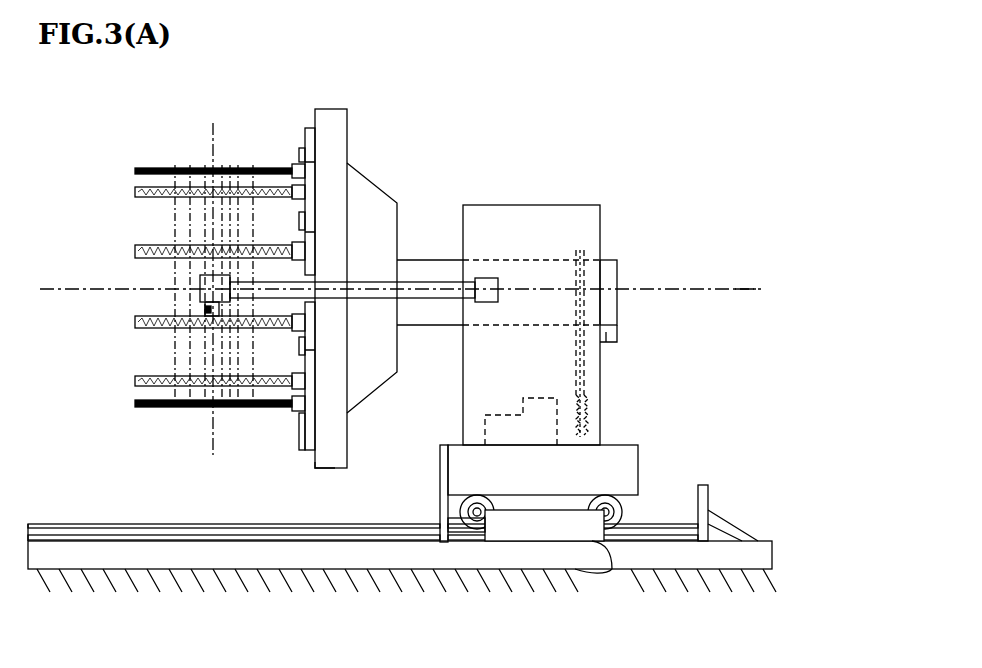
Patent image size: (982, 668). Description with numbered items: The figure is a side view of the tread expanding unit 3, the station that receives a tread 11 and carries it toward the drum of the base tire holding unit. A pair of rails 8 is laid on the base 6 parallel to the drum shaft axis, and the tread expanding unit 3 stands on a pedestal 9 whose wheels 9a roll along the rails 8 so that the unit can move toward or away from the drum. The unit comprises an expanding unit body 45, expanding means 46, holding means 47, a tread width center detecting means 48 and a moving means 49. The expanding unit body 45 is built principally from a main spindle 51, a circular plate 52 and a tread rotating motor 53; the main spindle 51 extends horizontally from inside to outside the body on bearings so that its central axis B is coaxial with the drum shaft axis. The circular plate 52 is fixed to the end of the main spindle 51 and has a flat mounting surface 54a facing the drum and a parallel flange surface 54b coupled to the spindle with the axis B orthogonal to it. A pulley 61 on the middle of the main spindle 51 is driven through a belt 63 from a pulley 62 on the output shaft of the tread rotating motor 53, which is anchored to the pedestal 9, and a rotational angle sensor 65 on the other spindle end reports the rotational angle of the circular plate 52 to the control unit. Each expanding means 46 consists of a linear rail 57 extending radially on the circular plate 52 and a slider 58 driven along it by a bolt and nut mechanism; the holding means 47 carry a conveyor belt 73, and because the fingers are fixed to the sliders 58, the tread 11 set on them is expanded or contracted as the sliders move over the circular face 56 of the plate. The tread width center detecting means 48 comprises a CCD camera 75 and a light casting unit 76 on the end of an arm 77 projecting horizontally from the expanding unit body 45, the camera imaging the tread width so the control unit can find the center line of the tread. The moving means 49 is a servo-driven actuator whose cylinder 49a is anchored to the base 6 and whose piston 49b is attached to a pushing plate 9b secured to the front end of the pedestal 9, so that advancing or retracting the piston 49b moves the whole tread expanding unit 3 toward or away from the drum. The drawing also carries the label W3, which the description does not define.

The tread expanding unit 3 is at (512, 284).
The base 6 is at (762, 541).
The rails 8 is at (63, 524).
The pedestal 9 is at (540, 486).
The wheels 9a is at (625, 518).
The pushing plate 9b is at (440, 482).
The tread 11 is at (162, 165).
The expanding unit body 45 is at (538, 210).
The expanding means 46 is at (303, 153).
The holding means 47 is at (194, 287).
The tread width center detecting means 48 is at (169, 293).
The moving means 49 is at (543, 573).
The cylinder 49a is at (535, 537).
The piston 49b is at (462, 528).
The main spindle 51 is at (438, 258).
The circular plate 52 is at (336, 120).
The tread rotating motor 53 is at (512, 410).
The mounting surface 54a is at (306, 128).
The flange surface 54b is at (397, 224).
The circular face 56 is at (312, 463).
The linear rail 57 is at (305, 216).
The slider 58 is at (298, 201).
The pulley 61 is at (570, 260).
The pulley 62 is at (572, 397).
The belt 63 is at (575, 365).
The rotational angle sensor 65 is at (612, 334).
The conveyor belt 73 is at (142, 245).
The CCD camera 75 is at (205, 310).
The light casting unit 76 is at (200, 288).
The arm 77 is at (423, 298).
The central axis B is at (734, 289).
The workpiece W3 is at (213, 133).